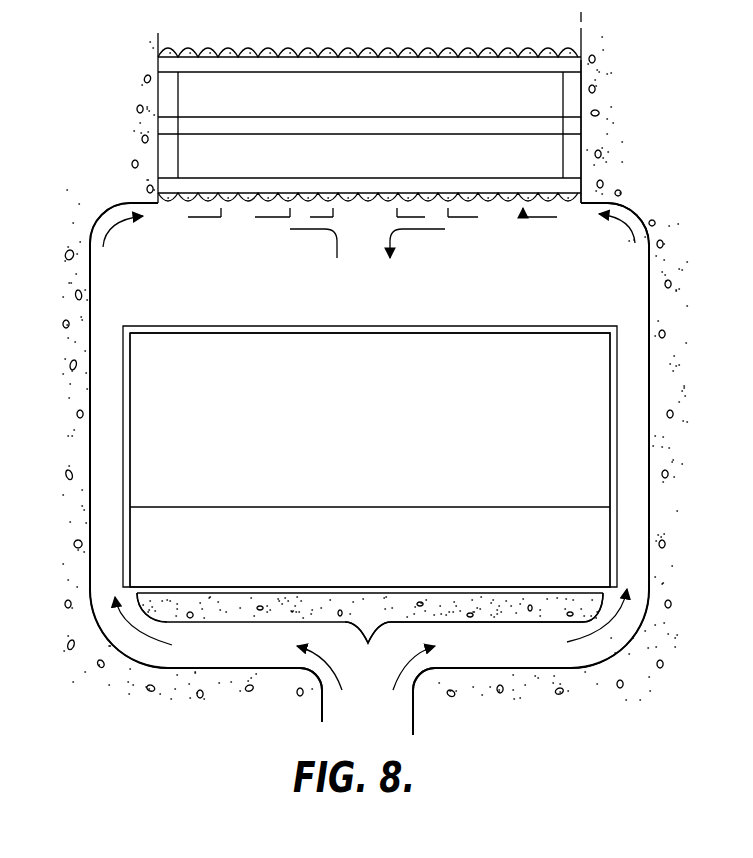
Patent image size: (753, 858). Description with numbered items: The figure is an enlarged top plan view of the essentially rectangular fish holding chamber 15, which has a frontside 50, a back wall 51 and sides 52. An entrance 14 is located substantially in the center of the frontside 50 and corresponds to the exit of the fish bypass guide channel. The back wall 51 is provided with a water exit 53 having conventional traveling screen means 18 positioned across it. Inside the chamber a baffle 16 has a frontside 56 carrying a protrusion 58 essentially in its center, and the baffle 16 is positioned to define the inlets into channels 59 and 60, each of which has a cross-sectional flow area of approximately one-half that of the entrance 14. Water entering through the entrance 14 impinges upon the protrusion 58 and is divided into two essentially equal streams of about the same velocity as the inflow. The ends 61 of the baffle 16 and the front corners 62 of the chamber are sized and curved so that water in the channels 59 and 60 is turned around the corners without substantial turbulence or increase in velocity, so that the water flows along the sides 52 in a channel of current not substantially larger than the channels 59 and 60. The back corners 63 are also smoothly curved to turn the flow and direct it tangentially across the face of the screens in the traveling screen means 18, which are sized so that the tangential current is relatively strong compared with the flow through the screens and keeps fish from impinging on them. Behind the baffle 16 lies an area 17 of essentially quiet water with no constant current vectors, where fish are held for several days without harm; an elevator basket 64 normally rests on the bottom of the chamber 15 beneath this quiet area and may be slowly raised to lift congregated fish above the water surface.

The entrance 14 is at (413, 708).
The fish holding chamber 15 is at (740, 282).
The baffle 16 is at (305, 598).
The quiet water area 17 is at (370, 460).
The traveling screen means 18 is at (203, 86).
The frontside 50 is at (535, 666).
The back wall 51 is at (622, 204).
The sides 52 is at (649, 385).
The water exit 53 is at (582, 78).
The frontside of baffle 56 is at (462, 623).
The protrusion 58 is at (372, 640).
The channel 59 is at (570, 434).
The channel 60 is at (177, 437).
The ends of baffle 61 is at (147, 612).
The front corners 62 is at (123, 650).
The back corners 63 is at (106, 205).
The elevator basket 64 is at (481, 325).